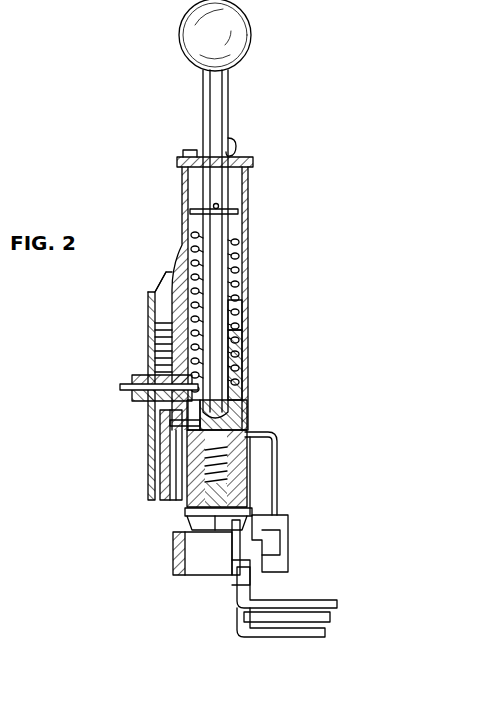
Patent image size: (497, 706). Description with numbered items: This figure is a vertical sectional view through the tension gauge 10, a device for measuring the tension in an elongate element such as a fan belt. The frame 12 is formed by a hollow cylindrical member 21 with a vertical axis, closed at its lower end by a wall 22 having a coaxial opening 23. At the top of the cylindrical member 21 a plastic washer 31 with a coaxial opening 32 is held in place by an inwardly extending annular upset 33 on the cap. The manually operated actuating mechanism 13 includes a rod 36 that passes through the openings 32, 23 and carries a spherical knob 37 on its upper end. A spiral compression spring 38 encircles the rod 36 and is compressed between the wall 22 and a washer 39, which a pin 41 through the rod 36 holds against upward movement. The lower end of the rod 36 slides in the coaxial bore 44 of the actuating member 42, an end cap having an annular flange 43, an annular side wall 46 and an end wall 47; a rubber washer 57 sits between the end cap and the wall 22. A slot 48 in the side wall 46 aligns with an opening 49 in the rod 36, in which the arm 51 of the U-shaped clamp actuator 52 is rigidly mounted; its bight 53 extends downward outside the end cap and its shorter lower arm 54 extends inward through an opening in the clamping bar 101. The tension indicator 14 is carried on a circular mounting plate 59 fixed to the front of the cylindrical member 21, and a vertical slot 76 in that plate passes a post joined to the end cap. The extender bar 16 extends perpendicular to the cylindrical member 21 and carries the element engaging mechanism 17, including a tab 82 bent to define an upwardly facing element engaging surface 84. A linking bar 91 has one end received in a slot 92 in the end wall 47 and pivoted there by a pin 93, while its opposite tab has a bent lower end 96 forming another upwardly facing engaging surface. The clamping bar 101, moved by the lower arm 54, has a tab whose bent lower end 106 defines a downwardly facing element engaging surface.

The tension gauge 10 is at (318, 245).
The frame 12 is at (233, 298).
The manually operated actuating mechanism 13 is at (205, 238).
The tension indicator 14 is at (120, 385).
The extender bar 16 is at (173, 560).
The element engaging mechanism 17 is at (331, 610).
The hollow cylindrical member 21 is at (248, 282).
The wall 22 is at (242, 385).
The opening 23 is at (242, 370).
The plastic washer 31 is at (250, 167).
The coaxial opening 32 is at (230, 150).
The annular upset 33 is at (197, 157).
The rod 36 is at (210, 107).
The spherical knob 37 is at (193, 37).
The spiral compression spring 38 is at (248, 250).
The washer 39 is at (238, 211).
The pin 41 is at (213, 207).
The actuating member 42 is at (192, 485).
The annular flange 43 is at (250, 410).
The coaxial bore 44 is at (250, 420).
The annular side wall 46 is at (190, 452).
The end wall 47 is at (272, 492).
The longitudinally extending slot 48 is at (252, 470).
The opening 49 is at (170, 445).
The arm 51 is at (250, 432).
The U-shaped clamp actuator 52 is at (277, 450).
The bight 53 is at (277, 483).
The lower arm 54 is at (288, 525).
The rubber washer 57 is at (247, 400).
The circular mounting plate 59 is at (148, 290).
The vertically extending slot 76 is at (150, 430).
The tab 82 is at (333, 598).
The element engaging surface 84 is at (298, 606).
The linking bar 91 is at (213, 540).
The slot 92 is at (190, 508).
The pin 93 is at (200, 522).
The lower end 96 is at (325, 633).
The clamping bar 101 is at (272, 537).
The lower end 106 is at (332, 618).